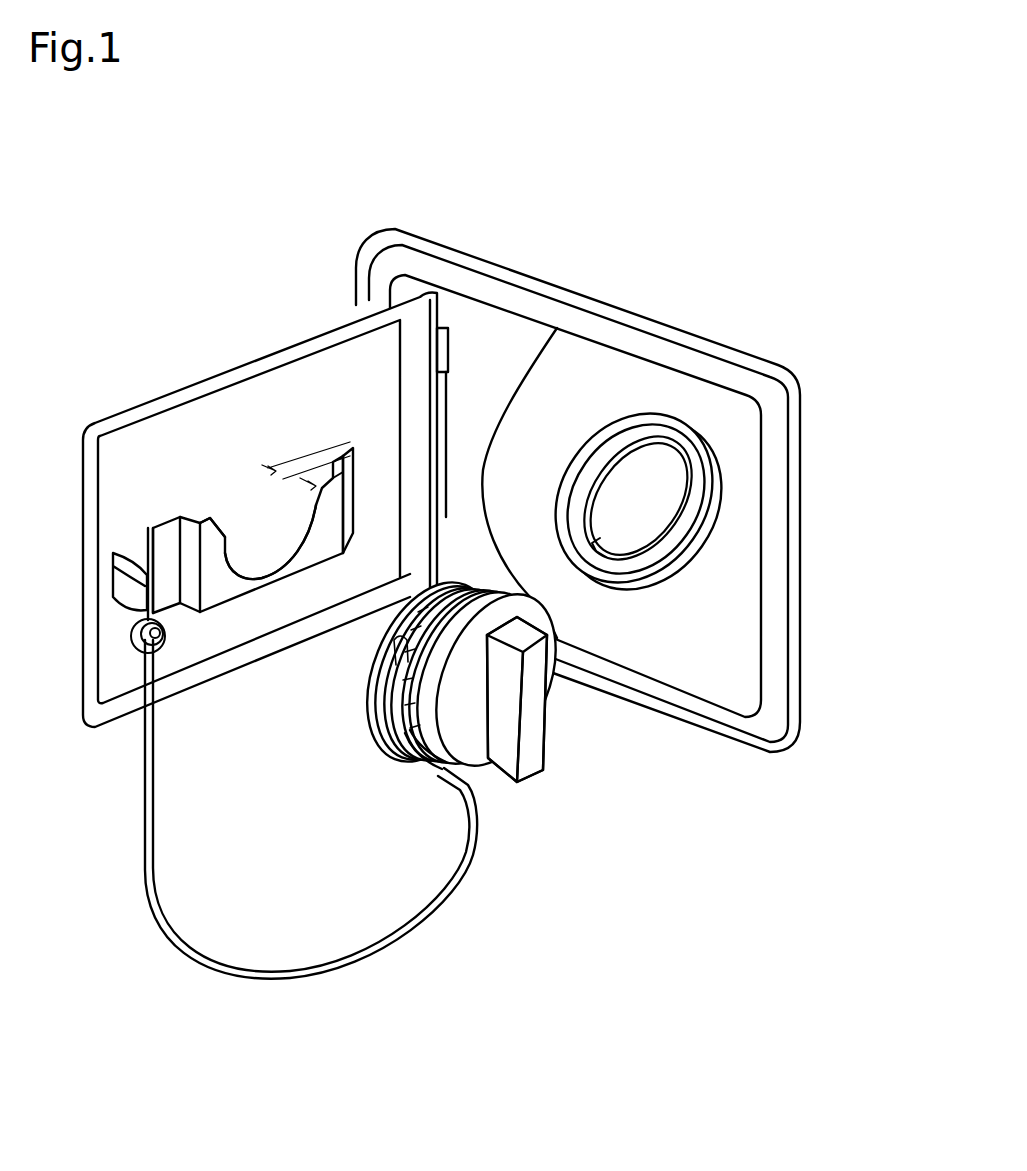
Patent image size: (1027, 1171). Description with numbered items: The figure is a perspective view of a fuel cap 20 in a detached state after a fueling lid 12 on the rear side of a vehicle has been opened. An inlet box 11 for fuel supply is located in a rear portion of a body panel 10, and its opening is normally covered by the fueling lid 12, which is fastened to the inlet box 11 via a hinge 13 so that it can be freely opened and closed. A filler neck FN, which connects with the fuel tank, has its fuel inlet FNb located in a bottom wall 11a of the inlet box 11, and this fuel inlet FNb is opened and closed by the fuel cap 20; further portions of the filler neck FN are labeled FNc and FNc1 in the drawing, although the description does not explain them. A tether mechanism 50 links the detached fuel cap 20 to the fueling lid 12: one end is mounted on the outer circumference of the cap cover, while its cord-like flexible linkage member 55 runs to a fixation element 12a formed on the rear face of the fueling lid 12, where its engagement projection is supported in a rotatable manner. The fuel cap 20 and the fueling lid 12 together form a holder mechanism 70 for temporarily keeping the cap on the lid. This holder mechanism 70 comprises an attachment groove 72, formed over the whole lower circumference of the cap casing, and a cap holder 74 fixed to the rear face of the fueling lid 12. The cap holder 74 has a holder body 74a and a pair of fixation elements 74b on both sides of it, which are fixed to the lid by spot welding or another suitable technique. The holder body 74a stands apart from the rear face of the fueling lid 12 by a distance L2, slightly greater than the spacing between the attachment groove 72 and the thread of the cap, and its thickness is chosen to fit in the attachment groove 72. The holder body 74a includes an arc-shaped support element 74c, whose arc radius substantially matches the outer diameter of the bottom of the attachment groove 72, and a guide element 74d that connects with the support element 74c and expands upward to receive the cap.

The body panel 10 is at (303, 195).
The inlet box 11 is at (498, 335).
The bottom wall 11a is at (598, 388).
The fueling lid 12 is at (260, 352).
The fixation element 12a is at (128, 723).
The hinge 13 is at (444, 348).
The fuel cap 20 is at (463, 737).
The tether mechanism 50 is at (480, 876).
The linkage member 55 is at (431, 919).
The holder mechanism 70 is at (335, 785).
The attachment groove 72 is at (382, 653).
The cap holder 74 is at (277, 578).
The holder body 74a is at (320, 538).
The fixation elements 74b is at (170, 540).
The support element 74c is at (240, 569).
The guide element 74d is at (216, 528).
The distance L2 is at (299, 478).
The filler neck FN is at (710, 497).
The fuel inlet FNb is at (675, 503).
The filler neck notch FNc is at (608, 497).
The notch end FNc1 is at (605, 540).